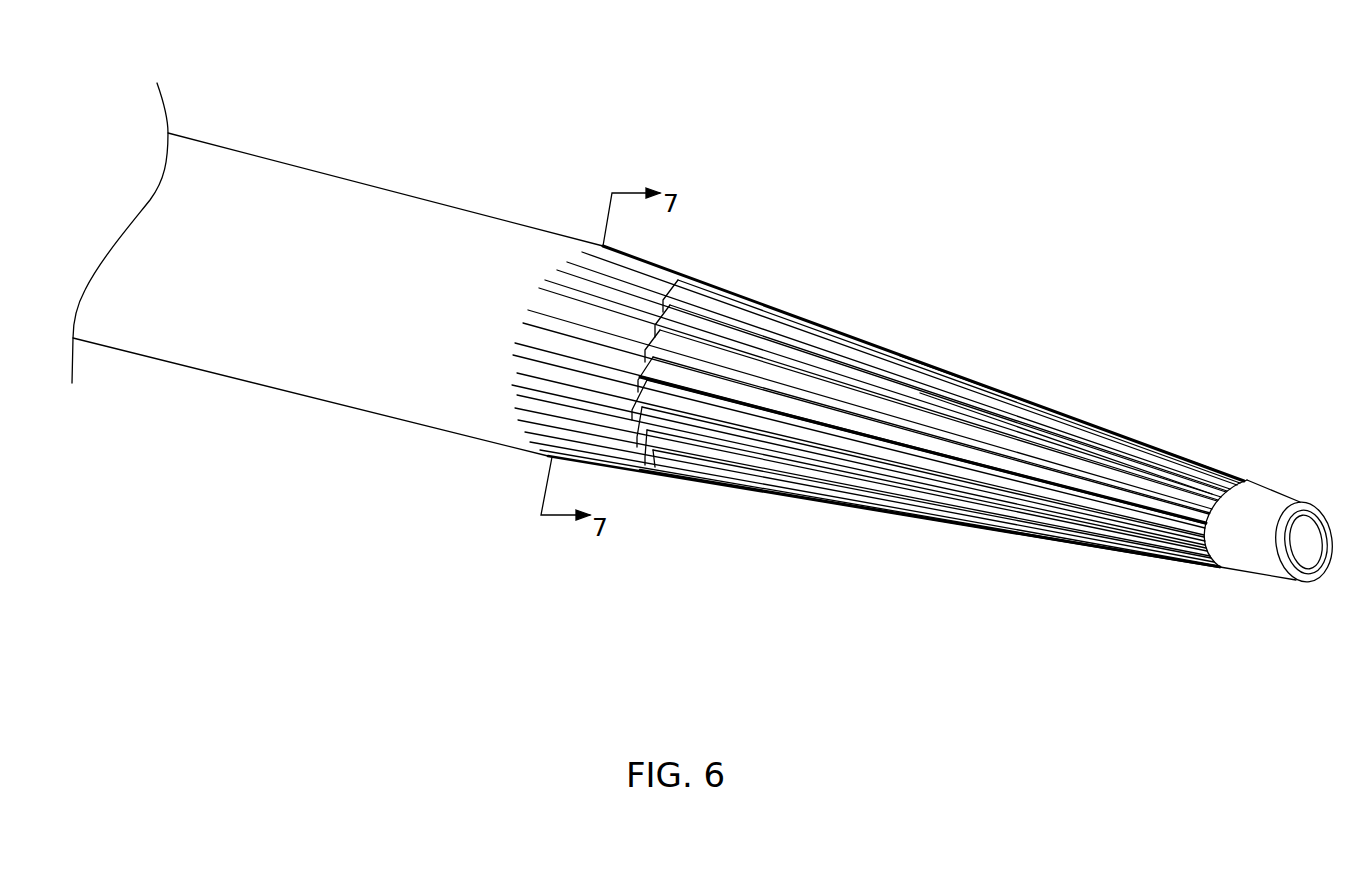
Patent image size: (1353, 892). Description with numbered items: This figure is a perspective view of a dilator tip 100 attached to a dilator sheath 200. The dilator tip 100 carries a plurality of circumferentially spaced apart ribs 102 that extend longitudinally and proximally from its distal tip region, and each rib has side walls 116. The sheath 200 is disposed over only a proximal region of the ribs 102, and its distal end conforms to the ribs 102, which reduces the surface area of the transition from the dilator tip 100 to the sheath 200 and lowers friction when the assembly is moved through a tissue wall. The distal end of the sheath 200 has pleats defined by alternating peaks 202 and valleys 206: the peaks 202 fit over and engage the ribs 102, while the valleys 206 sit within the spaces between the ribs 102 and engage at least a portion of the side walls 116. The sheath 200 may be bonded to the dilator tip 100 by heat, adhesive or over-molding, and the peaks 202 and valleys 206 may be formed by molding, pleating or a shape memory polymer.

The dilator tip 100 is at (1072, 417).
The ribs 102 is at (817, 353).
The side walls 116 is at (892, 388).
The dilator sheath 200 is at (377, 203).
The peaks 202 is at (643, 295).
The valleys 206 is at (653, 308).